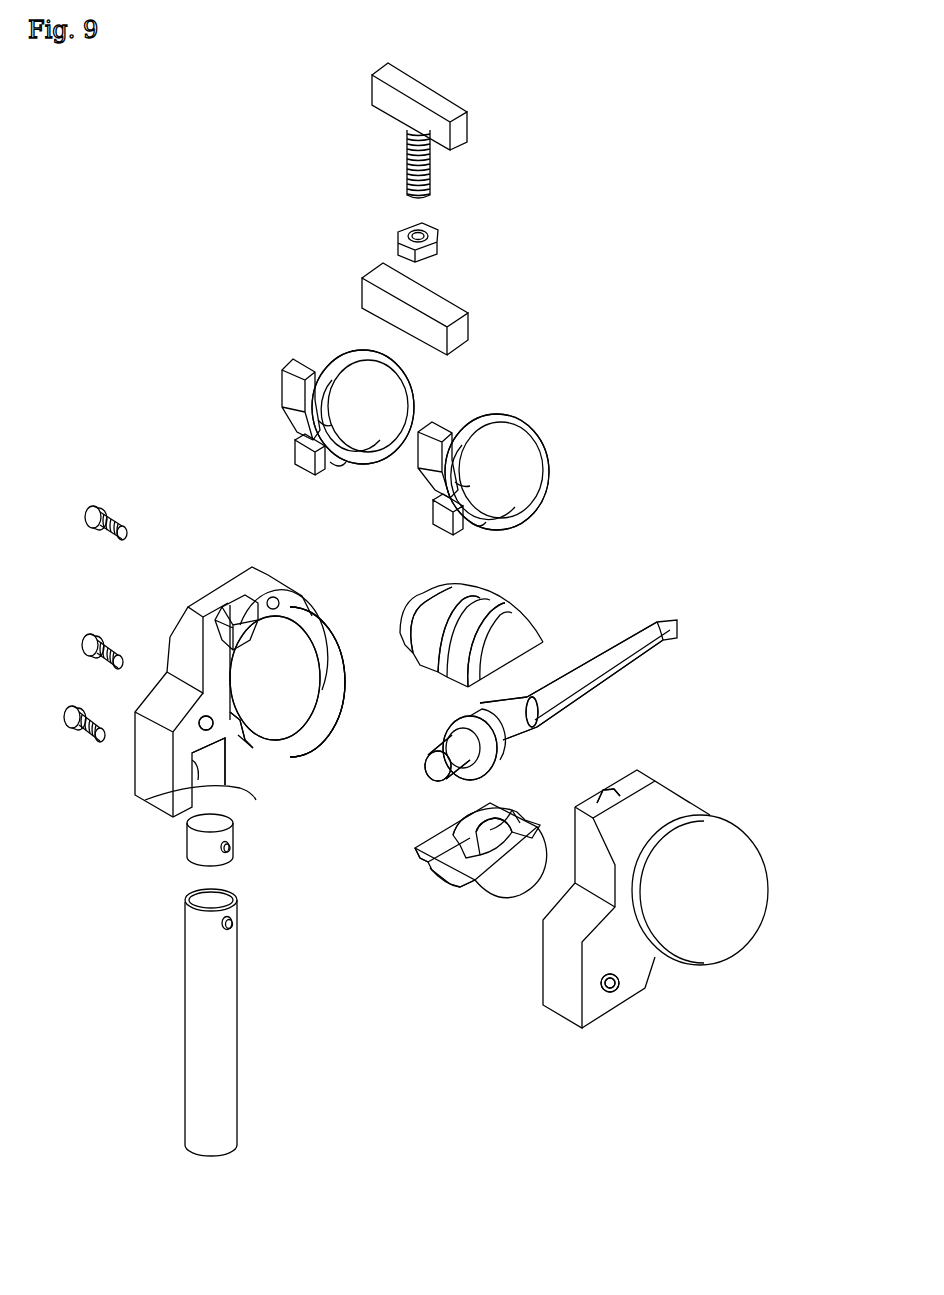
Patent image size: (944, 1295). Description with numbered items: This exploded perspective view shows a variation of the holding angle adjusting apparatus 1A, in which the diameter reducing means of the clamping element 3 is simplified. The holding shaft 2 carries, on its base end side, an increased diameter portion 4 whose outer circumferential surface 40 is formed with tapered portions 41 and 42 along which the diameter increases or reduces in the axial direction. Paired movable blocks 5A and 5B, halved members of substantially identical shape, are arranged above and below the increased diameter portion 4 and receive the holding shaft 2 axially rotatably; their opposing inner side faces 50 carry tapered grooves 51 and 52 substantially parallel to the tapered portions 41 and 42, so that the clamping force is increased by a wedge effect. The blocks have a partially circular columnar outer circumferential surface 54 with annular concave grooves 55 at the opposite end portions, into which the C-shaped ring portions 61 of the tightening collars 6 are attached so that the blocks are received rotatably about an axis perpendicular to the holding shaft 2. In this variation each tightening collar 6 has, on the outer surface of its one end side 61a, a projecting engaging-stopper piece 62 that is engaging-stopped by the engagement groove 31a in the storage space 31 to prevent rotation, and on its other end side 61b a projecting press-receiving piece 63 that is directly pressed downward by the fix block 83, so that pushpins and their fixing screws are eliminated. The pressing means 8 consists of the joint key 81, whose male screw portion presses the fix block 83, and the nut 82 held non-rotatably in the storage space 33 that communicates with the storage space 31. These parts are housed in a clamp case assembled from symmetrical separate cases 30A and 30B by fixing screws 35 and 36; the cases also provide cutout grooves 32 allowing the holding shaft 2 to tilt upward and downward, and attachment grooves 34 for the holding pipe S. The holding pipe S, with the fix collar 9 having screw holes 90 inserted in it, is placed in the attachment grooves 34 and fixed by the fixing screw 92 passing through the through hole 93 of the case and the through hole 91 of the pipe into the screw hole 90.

The joint key 81 is at (450, 103).
The pressing means 8 is at (526, 199).
The holder 1A is at (649, 197).
The clamping element 3 is at (237, 248).
The nut 82 is at (436, 244).
The fix block 83 is at (445, 298).
The tightening collar 6 is at (340, 355).
The ring portion 61 is at (413, 397).
The press-receiving piece 63 is at (287, 390).
The engaging-stopper piece 62 is at (298, 447).
The ring end 61a is at (337, 466).
The other end side 61b is at (313, 421).
The fixing screw 35 is at (93, 505).
The fixing screw 36 is at (90, 633).
The fixing screw 92 is at (88, 742).
The separate case 30A is at (217, 592).
The storage space 31 is at (288, 632).
The cutout groove 32 is at (327, 637).
The storage space 33 is at (210, 632).
The engagement groove 31a is at (248, 747).
The attachment groove 34 is at (212, 787).
The through hole 93 is at (153, 800).
The fix collar 9 is at (192, 845).
The screw hole 90 is at (228, 855).
The holding pipe S is at (230, 1030).
The through hole 91 is at (235, 928).
The movable block 5A is at (488, 588).
The movable block 5B is at (513, 890).
The annular concave groove 55 is at (415, 590).
The outer circumferential surface 54 is at (462, 588).
The inner side face 50 is at (420, 837).
The tapered groove 51 is at (490, 815).
The tapered groove 52 is at (455, 830).
The holding shaft 2 is at (637, 625).
The tapered portion 41 is at (487, 707).
The outer circumferential surface 40 is at (460, 716).
The tapered portion 42 is at (445, 733).
The increased diameter portion 4 is at (495, 760).
The separate case 30B is at (690, 803).